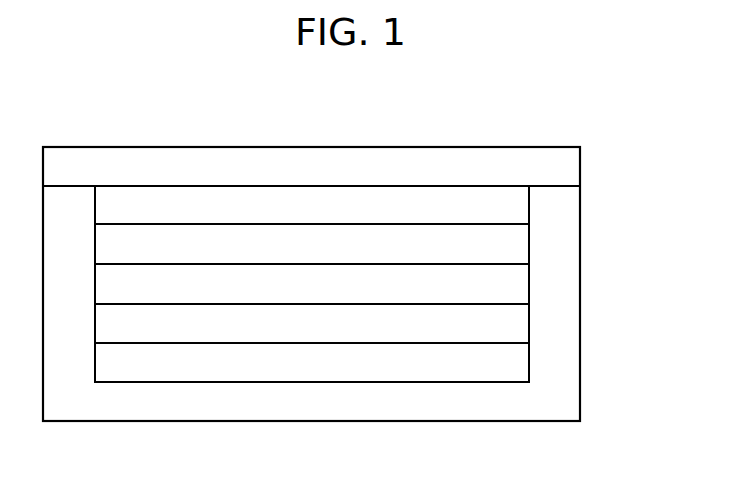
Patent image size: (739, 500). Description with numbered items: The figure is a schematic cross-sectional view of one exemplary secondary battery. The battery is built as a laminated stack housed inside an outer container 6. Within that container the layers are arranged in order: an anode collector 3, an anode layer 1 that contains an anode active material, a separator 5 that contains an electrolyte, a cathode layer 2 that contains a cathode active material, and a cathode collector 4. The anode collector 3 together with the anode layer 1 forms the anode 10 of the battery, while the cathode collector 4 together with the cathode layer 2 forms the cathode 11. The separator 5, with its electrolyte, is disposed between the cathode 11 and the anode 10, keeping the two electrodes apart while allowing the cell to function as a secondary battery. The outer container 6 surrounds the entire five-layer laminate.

The anode layer 1 is at (520, 245).
The cathode layer 2 is at (520, 325).
The anode collector 3 is at (520, 207).
The cathode collector 4 is at (520, 364).
The separator 5 is at (520, 288).
The outer container 6 is at (494, 160).
The anode 10 is at (668, 201).
The cathode 11 is at (671, 319).